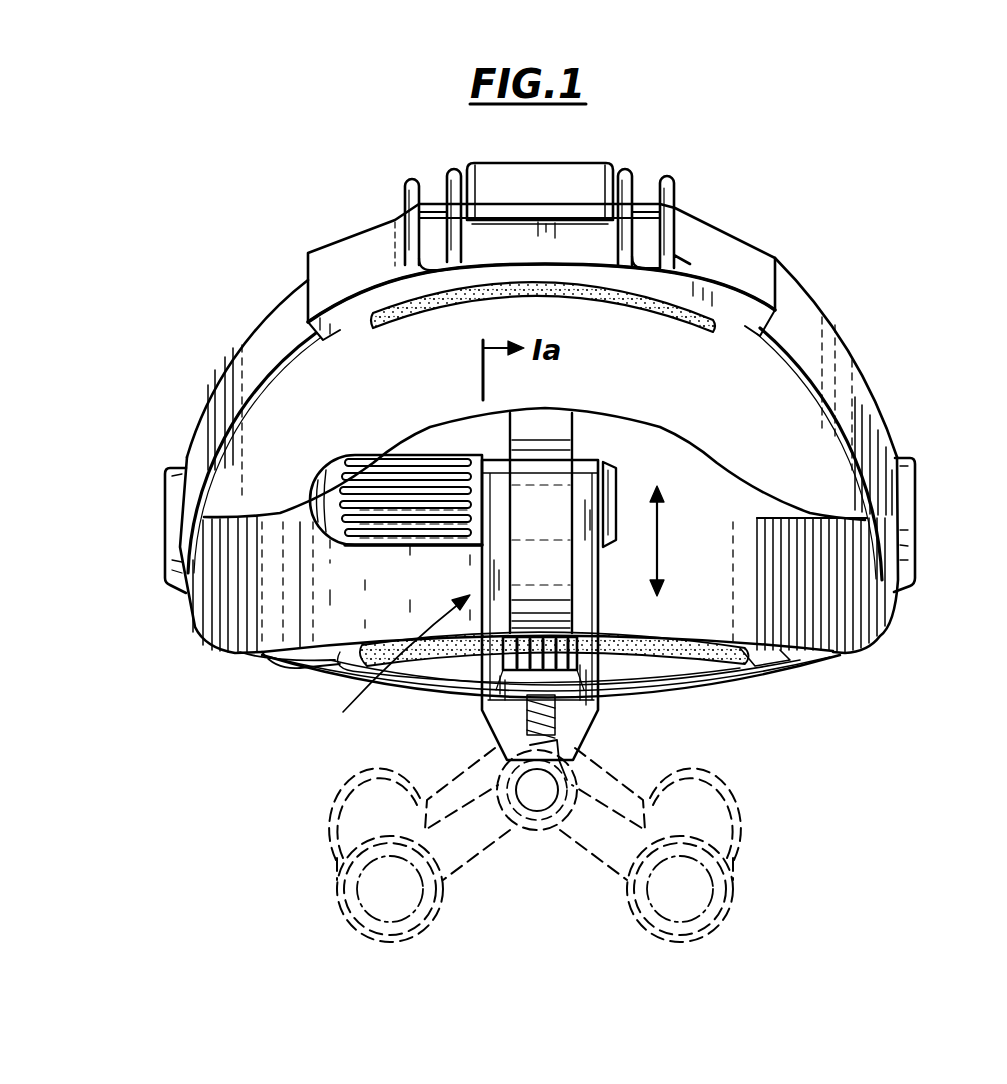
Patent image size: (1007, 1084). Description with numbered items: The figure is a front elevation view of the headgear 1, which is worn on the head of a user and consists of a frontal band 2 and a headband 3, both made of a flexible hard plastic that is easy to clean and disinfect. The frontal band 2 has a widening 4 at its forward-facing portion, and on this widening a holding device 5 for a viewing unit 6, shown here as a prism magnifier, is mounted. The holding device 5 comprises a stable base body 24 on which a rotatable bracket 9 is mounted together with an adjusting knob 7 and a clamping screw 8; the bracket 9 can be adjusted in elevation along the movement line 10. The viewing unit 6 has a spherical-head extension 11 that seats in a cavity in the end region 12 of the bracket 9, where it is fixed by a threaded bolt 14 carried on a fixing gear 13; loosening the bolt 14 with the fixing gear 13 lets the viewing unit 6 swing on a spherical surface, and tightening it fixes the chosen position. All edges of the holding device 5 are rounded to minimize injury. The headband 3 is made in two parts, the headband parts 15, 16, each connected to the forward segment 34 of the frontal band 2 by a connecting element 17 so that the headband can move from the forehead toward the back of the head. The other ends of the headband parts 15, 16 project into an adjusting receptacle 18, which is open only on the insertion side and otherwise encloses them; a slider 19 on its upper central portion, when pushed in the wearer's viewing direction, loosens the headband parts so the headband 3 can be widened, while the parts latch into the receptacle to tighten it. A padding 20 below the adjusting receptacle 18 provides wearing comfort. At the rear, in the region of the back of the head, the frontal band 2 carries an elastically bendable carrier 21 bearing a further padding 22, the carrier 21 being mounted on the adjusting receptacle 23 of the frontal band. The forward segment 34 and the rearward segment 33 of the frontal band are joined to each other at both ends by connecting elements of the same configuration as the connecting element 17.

The headgear 1 is at (832, 286).
The frontal band 2 is at (868, 630).
The headband 3 is at (845, 352).
The widening 4 is at (705, 478).
The holding device 5 is at (412, 664).
The viewing unit 6 is at (735, 857).
The adjusting knob 7 is at (345, 460).
The clamping screw 8 is at (617, 482).
The bracket 9 is at (588, 608).
The movement line 10 is at (660, 546).
The spherical-head extension 11 is at (565, 738).
The end region 12 is at (502, 672).
The fixing gear 13 is at (510, 660).
The threaded bolt 14 is at (558, 706).
The headband part 15 is at (207, 407).
The headband part 16 is at (860, 407).
The connecting element 17 is at (165, 520).
The adjusting receptacle 18 is at (735, 250).
The slider 19 is at (582, 173).
The padding 20 is at (676, 318).
The carrier 21 is at (734, 662).
The padding 22 is at (690, 655).
The adjusting receptacle 23 is at (780, 672).
The base body 24 is at (516, 422).
The rearward segment 33 is at (283, 663).
The forward segment 34 is at (210, 637).